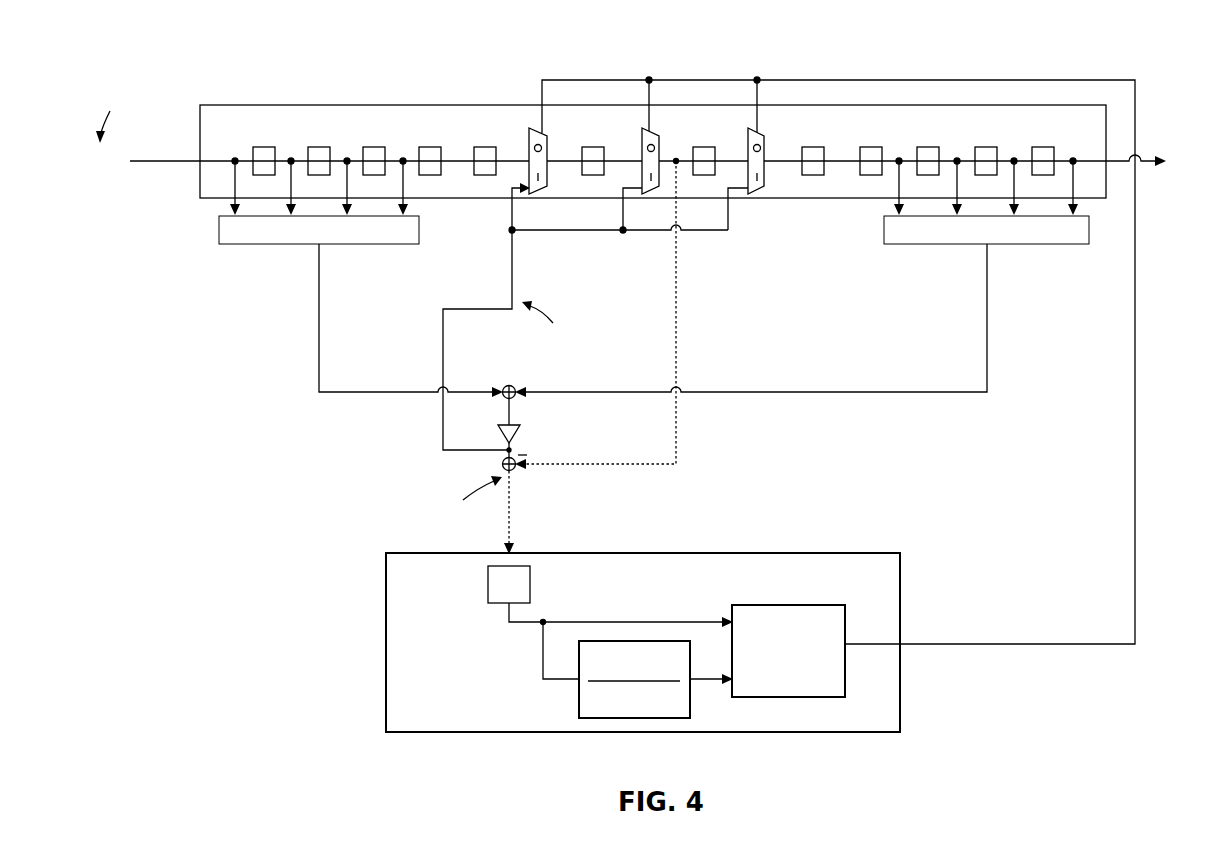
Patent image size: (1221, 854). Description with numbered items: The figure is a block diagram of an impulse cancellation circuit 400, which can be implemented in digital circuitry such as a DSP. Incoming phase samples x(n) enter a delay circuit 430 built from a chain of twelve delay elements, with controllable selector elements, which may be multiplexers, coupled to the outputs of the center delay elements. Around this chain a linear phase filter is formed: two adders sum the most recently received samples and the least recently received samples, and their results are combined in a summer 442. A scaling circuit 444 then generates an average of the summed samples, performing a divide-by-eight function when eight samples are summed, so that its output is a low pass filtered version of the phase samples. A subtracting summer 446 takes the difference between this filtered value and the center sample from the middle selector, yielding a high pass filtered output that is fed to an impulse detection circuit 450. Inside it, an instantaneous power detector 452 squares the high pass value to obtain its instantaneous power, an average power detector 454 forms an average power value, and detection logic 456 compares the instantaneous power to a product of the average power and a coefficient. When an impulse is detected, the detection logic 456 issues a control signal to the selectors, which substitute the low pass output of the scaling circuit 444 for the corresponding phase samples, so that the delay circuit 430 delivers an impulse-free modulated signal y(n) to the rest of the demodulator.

The cancellation circuit 400 is at (128, 44).
The delay circuit 430 is at (200, 181).
The summer 442 is at (504, 387).
The scaling circuit 444 is at (519, 426).
The summer (high pass filter) 446 is at (503, 460).
The impulse detection circuit 450 is at (773, 553).
The instantaneous power detector 452 is at (530, 588).
The average power detector 454 is at (579, 700).
The detection logic 456 is at (748, 605).